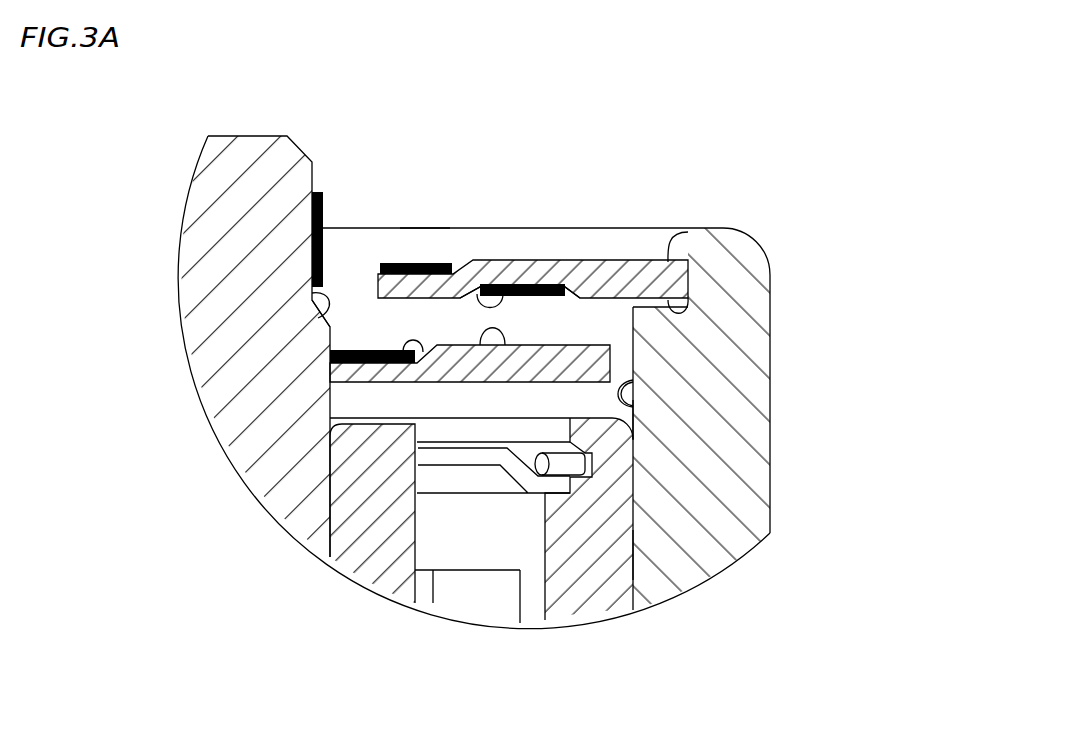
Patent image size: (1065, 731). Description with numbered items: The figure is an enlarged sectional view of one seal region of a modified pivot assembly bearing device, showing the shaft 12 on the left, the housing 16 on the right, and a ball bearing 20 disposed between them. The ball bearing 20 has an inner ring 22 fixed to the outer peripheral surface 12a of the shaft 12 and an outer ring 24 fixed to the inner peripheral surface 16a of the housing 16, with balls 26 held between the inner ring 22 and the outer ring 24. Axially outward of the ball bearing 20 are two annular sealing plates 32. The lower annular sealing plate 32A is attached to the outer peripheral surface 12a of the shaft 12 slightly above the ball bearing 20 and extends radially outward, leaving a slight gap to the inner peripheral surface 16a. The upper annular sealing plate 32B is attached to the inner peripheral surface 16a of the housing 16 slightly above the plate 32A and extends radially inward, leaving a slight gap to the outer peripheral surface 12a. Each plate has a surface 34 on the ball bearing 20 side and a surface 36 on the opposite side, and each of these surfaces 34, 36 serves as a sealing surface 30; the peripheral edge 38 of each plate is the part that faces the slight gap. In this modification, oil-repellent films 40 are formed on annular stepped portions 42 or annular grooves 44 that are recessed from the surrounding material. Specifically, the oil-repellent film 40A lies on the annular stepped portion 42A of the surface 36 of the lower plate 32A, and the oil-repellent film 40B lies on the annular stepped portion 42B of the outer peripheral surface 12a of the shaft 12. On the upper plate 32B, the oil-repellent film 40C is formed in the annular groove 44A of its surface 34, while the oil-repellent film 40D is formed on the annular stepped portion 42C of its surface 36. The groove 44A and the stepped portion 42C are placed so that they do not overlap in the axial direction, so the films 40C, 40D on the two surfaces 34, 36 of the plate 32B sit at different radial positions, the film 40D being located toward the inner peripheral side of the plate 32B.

The shaft 12 is at (210, 190).
The outer peripheral surface of the shaft 12a is at (330, 330).
The housing 16 is at (730, 480).
The inner peripheral surface of the housing 16a is at (718, 418).
The ball bearing 20 is at (634, 553).
The inner ring 22 is at (370, 553).
The outer ring 24 is at (597, 590).
The ball 26 is at (625, 592).
The sealing surface 30 is at (611, 437).
The annular sealing plate 32 is at (536, 406).
The annular sealing plate 32A is at (384, 449).
The annular sealing plate 32B is at (646, 279).
The surface on the ball bearing side 34 is at (440, 663).
The surface on the opposite side 36 is at (523, 437).
The adhesive layer 38 is at (416, 262).
The oil-repellent film 40 is at (607, 218).
The oil-repellent film 40A is at (408, 207).
The oil-repellent film 40B is at (335, 191).
The oil-repellent film 40C is at (697, 330).
The oil-repellent film 40D is at (423, 228).
The annular stepped portion 42 is at (305, 411).
The annular stepped portion 42A is at (379, 518).
The annular stepped portion 42B is at (254, 383).
The annular stepped portion 42C is at (497, 282).
The annular groove 44 is at (575, 199).
The annular groove 44A is at (540, 268).